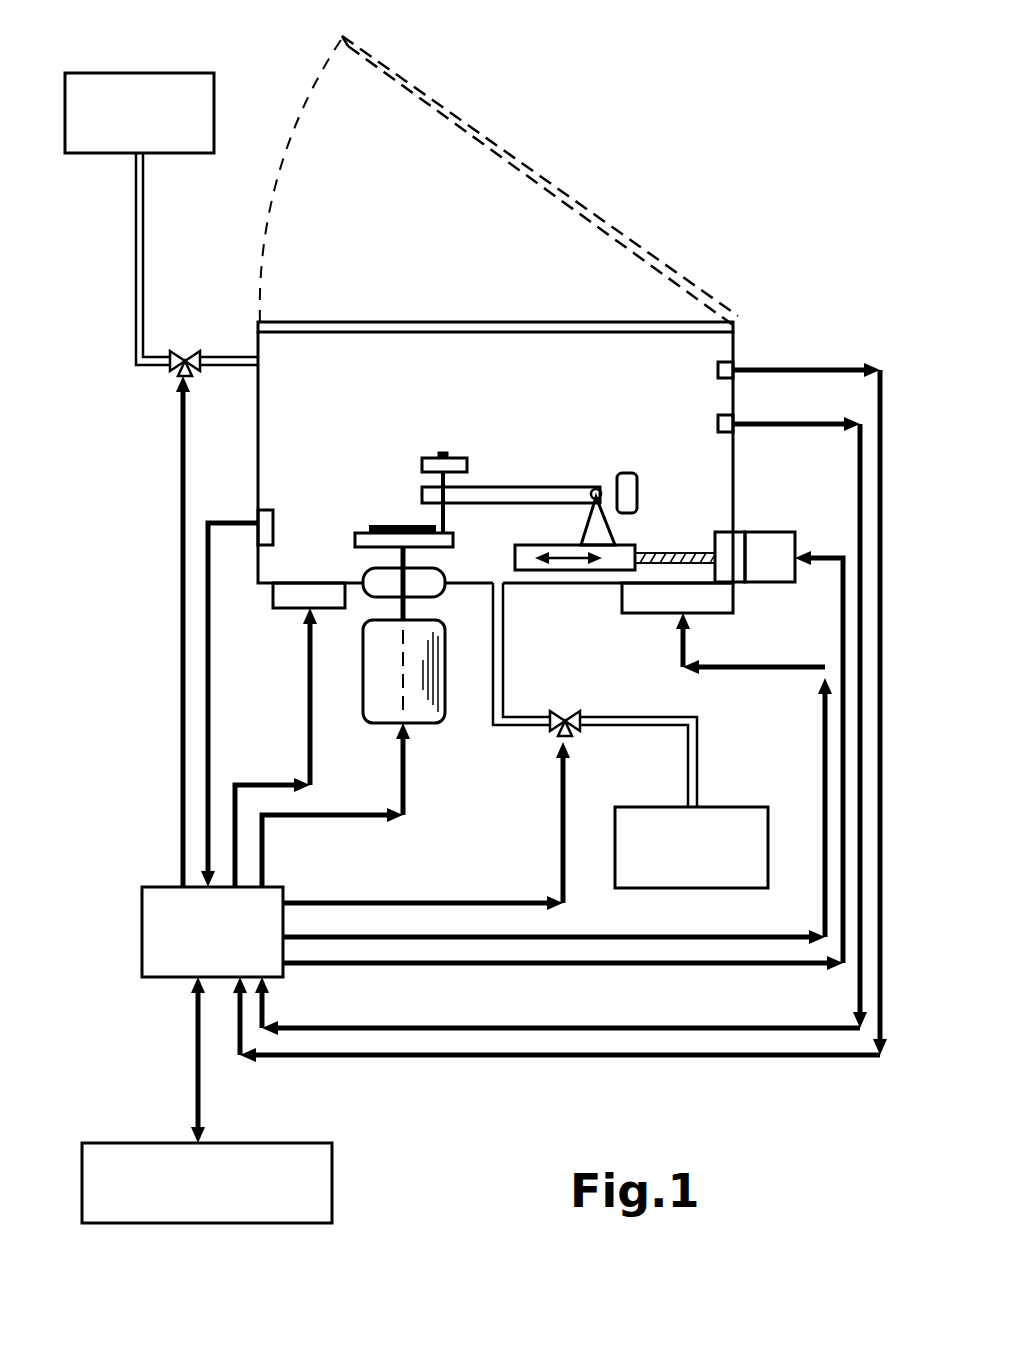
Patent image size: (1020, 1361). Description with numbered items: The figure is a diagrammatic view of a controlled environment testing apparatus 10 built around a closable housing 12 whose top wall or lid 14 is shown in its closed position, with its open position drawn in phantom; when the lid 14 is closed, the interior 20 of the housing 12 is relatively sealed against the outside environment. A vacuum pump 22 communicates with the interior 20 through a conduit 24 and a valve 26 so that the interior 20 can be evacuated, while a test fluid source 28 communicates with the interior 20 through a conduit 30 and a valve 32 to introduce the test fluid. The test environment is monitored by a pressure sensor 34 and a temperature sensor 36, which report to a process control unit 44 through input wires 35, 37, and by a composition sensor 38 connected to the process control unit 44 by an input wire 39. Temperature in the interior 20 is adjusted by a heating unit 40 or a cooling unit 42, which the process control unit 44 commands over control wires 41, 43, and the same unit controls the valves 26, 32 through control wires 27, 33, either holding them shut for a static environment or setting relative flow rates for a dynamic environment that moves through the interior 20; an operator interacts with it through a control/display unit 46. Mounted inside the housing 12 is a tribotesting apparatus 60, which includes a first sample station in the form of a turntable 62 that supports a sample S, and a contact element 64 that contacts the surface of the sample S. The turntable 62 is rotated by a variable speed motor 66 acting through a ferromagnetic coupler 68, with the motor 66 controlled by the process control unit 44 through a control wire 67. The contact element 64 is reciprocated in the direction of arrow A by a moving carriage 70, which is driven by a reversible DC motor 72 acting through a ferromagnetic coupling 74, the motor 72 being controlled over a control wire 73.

The testing apparatus 10 is at (712, 86).
The closable housing 12 is at (745, 300).
The lid 14 is at (413, 323).
The interior 20 is at (368, 378).
The vacuum pump 22 is at (712, 806).
The conduit 24 is at (510, 728).
The valve 26 is at (583, 732).
The control wire 27 is at (560, 858).
The test fluid source 28 is at (128, 73).
The conduit 30 is at (143, 215).
The valve 32 is at (176, 373).
The control wire 33 is at (180, 467).
The pressure sensor 34 is at (717, 372).
The input wire 35 is at (820, 370).
The temperature sensor 36 is at (717, 425).
The input wire 37 is at (775, 424).
The sensor 38 is at (262, 520).
The input wire 39 is at (205, 575).
The heating unit 40 is at (300, 608).
The control wire 41 is at (308, 722).
The cooling unit 42 is at (707, 610).
The control wire 43 is at (640, 937).
The process control unit 44 is at (142, 887).
The control/display unit 46 is at (332, 1168).
The tribotesting apparatus 60 is at (612, 350).
The turntable 62 is at (372, 525).
The contact element 64 is at (447, 528).
The variable speed motor 66 is at (410, 715).
The control wire 67 is at (360, 818).
The ferromagnetic coupler 68 is at (372, 583).
The moving carriage 70 is at (523, 570).
The reversible DC motor 72 is at (758, 530).
The control wire 73 is at (640, 963).
The ferromagnetic coupling 74 is at (733, 583).
The sample S is at (395, 518).
The arrow A is at (562, 570).